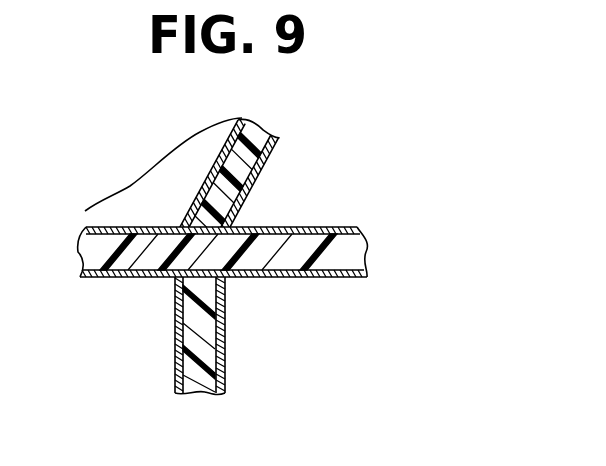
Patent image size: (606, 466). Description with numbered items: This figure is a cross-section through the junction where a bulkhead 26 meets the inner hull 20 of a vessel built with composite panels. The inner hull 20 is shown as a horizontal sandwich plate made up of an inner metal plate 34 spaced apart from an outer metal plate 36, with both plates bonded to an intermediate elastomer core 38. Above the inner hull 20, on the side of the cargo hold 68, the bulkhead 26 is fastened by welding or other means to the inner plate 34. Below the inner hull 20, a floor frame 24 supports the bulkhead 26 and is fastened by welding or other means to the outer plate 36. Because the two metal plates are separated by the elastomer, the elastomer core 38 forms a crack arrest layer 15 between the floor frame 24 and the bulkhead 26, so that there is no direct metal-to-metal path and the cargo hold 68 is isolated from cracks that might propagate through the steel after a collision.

The crack arrest layer 15 is at (346, 262).
The inner hull 20 is at (343, 227).
The floor frame 24 is at (227, 312).
The bulkhead 26 is at (203, 176).
The inner metal plate 34 is at (200, 172).
The outer metal plate 36 is at (263, 167).
The elastomer core 38 is at (267, 132).
The cargo hold 68 is at (136, 212).